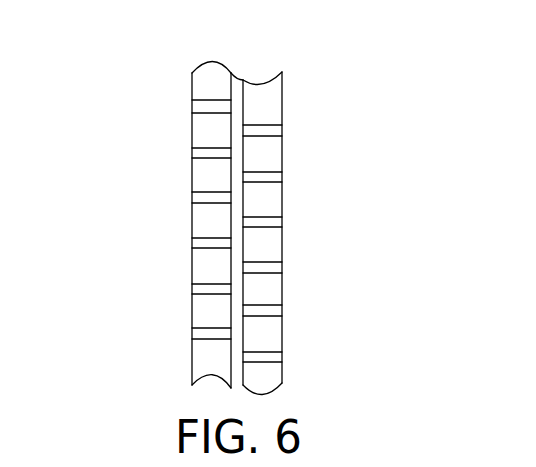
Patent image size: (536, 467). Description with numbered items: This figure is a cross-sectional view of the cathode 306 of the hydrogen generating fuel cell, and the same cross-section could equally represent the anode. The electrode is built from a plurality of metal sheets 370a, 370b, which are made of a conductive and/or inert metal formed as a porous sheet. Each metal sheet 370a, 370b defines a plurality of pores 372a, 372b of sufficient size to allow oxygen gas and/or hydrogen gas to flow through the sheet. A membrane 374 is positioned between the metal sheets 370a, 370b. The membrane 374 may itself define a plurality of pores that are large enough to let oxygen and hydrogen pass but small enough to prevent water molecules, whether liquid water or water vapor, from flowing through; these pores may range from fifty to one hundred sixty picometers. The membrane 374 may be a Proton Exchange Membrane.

The cathode 306 is at (237, 201).
The metal sheet 370a is at (336, 233).
The metal sheet 370b is at (138, 225).
The pores 372a is at (279, 128).
The pores 372b is at (196, 101).
The membrane 374 is at (236, 82).